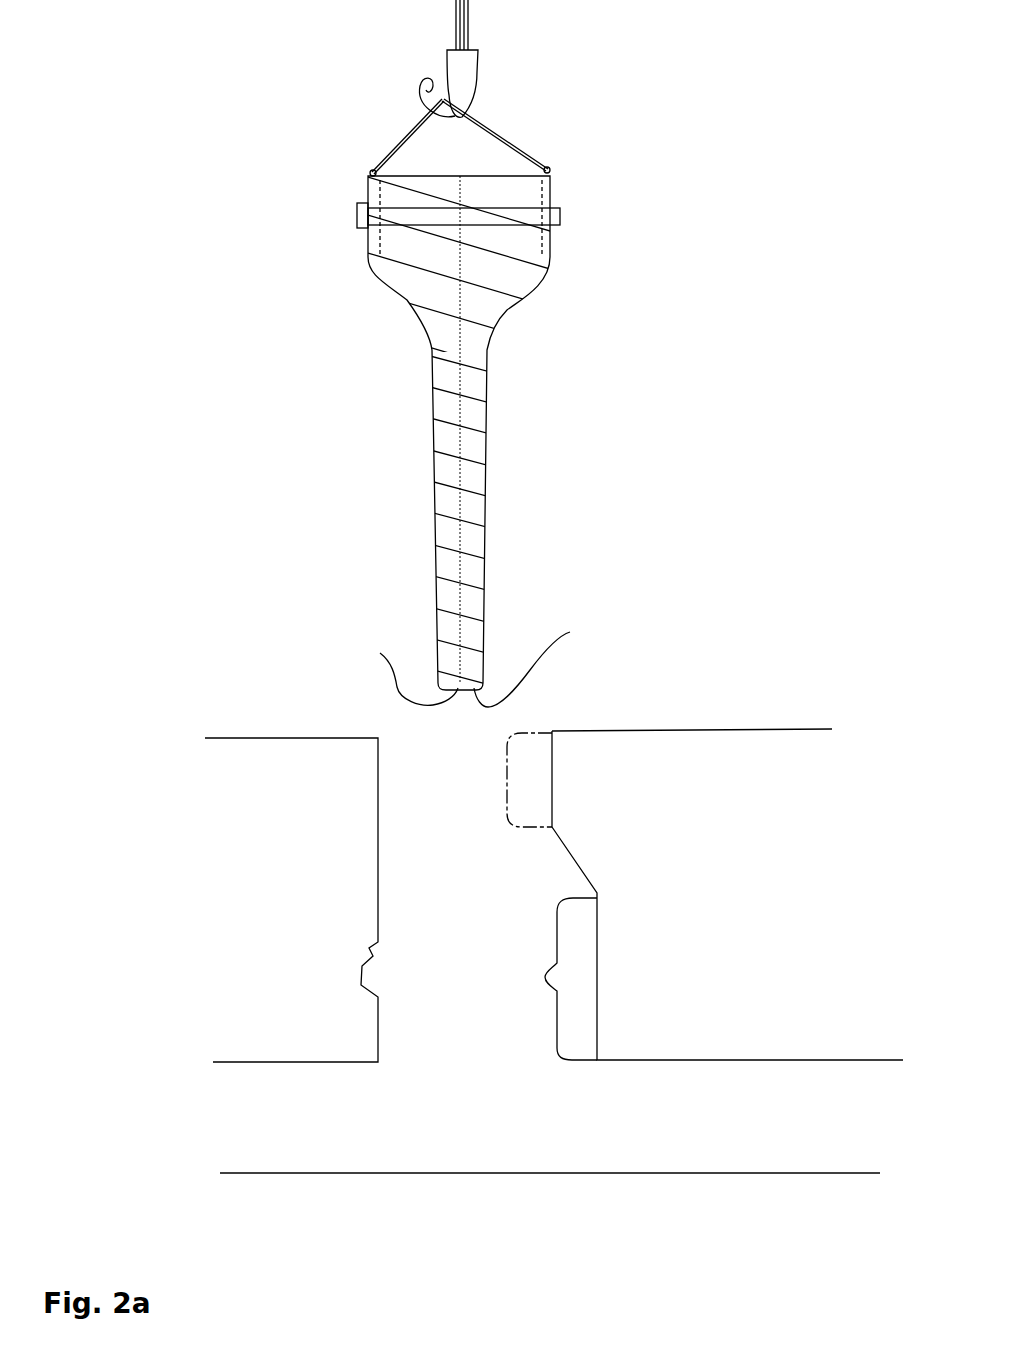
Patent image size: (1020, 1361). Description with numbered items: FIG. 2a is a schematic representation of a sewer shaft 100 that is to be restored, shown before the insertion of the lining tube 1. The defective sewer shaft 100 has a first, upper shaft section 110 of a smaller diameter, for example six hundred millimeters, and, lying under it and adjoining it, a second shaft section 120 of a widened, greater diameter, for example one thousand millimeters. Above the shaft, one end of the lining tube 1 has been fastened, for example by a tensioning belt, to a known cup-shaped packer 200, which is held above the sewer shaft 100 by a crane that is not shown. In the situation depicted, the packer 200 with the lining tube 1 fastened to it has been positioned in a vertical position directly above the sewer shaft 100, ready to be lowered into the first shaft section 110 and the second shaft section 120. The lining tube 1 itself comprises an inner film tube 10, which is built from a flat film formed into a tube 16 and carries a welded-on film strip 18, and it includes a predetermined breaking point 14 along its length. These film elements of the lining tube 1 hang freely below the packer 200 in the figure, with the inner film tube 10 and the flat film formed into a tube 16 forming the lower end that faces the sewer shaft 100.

The lining tube 1 is at (544, 433).
The inner film tube 10 is at (592, 655).
The predetermined breaking point 14 is at (463, 538).
The flat film formed into a tube 16 is at (570, 632).
The welded-on film strip 18 is at (380, 653).
The sewer shaft 100 is at (554, 903).
The first shaft section 110 is at (507, 782).
The second shaft section 120 is at (543, 969).
The packer 200 is at (553, 195).